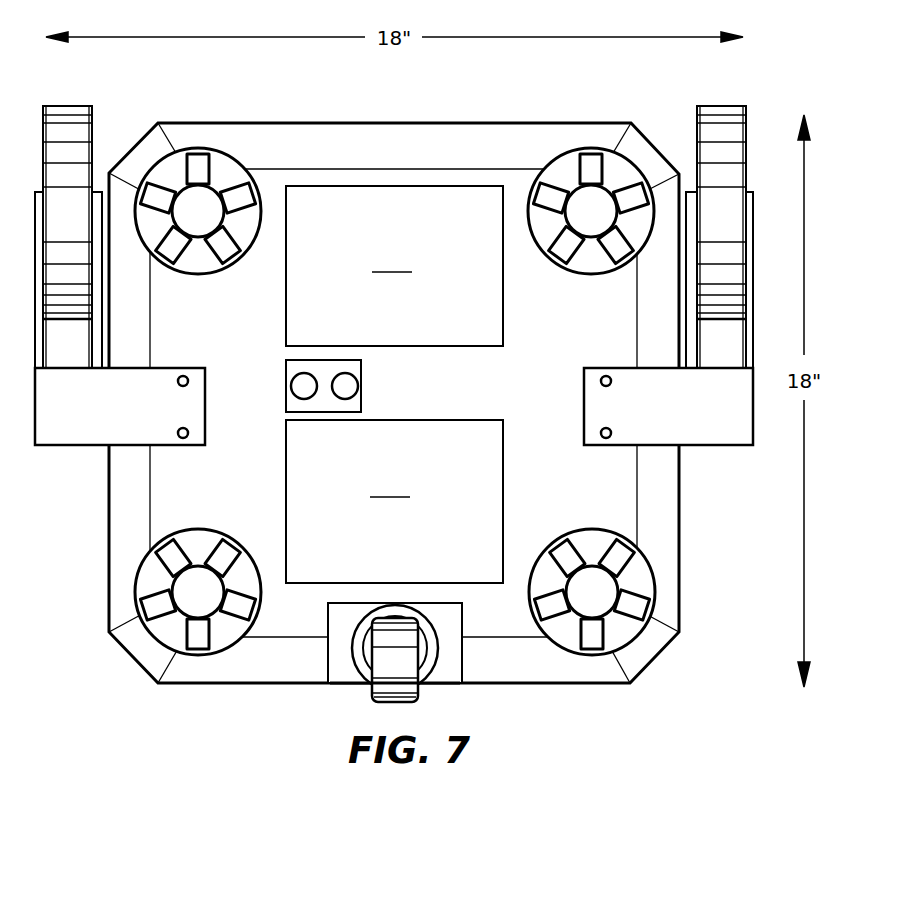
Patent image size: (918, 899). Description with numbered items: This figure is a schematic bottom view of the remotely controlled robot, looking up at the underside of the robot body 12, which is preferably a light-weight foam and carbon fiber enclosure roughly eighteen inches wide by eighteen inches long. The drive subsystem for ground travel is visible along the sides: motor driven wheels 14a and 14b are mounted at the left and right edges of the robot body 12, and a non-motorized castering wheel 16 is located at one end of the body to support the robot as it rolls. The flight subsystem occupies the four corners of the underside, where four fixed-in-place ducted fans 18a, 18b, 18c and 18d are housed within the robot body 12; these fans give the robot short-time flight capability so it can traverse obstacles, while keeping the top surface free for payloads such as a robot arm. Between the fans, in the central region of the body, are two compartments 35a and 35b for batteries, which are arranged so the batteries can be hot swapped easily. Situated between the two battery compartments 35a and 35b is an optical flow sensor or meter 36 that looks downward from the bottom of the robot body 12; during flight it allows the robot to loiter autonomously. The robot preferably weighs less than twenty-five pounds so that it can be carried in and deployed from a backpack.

The robot body 12 is at (420, 150).
The motor driven wheel 14a is at (722, 115).
The motor driven wheel 14b is at (72, 118).
The non-motorized castering wheel 16 is at (395, 633).
The ducted fan 18a is at (570, 168).
The ducted fan 18b is at (627, 608).
The ducted fan 18c is at (163, 603).
The ducted fan 18d is at (203, 170).
The battery compartment 35a is at (394, 266).
The battery compartment 35b is at (394, 501).
The optical flow sensor 36 is at (350, 385).